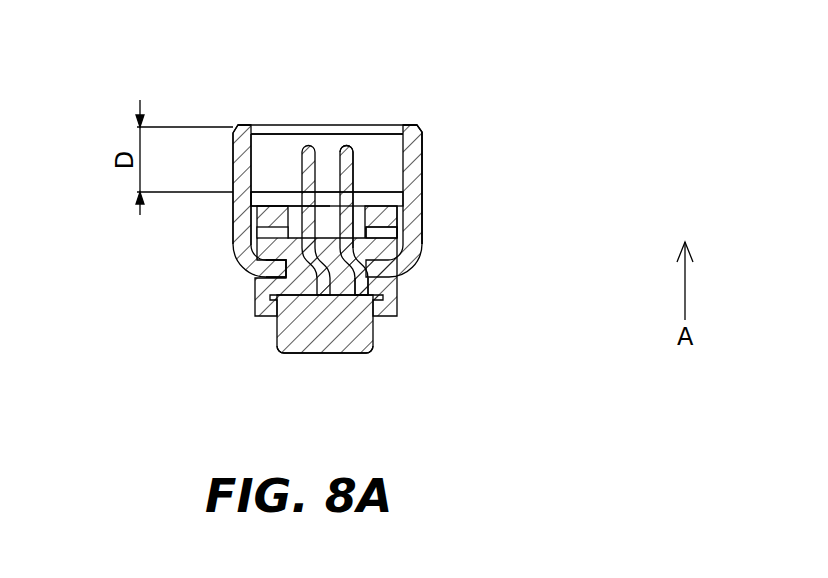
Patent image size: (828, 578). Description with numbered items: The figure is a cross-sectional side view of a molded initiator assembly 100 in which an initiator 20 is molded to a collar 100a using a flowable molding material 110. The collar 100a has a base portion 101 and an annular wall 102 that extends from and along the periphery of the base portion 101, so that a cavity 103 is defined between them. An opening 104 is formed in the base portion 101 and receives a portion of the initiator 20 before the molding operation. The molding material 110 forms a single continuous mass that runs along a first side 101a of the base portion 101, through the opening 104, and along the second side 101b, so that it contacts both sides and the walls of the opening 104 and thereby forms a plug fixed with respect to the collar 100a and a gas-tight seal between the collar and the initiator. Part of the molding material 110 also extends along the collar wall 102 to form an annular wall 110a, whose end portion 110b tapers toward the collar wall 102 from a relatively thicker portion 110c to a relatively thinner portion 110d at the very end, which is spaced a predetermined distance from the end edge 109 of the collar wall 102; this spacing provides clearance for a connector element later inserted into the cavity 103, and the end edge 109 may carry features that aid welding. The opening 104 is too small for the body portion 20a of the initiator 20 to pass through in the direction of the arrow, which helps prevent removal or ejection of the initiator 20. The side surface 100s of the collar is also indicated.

The initiator assembly 100 is at (262, 394).
The collar 100a is at (423, 142).
The side surface of housing 100s is at (423, 228).
The base portion 101 is at (257, 266).
The first side 101a is at (381, 256).
The second side 101b is at (400, 280).
The annular wall 102 is at (252, 229).
The cavity 103 is at (366, 166).
The opening 104 is at (270, 280).
The end edge of collar wall 109 is at (245, 127).
The molding material 110 is at (400, 318).
The annular wall of molding material 110a is at (252, 214).
The end portion 110b is at (254, 193).
The thicker portion 110c is at (403, 213).
The thinner portion 110d is at (400, 199).
The initiator 20 is at (378, 356).
The body portion 20a is at (326, 340).